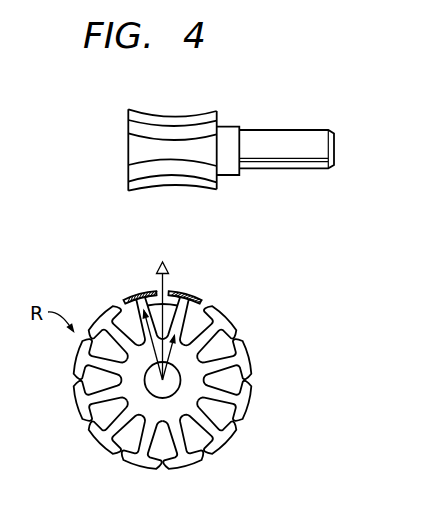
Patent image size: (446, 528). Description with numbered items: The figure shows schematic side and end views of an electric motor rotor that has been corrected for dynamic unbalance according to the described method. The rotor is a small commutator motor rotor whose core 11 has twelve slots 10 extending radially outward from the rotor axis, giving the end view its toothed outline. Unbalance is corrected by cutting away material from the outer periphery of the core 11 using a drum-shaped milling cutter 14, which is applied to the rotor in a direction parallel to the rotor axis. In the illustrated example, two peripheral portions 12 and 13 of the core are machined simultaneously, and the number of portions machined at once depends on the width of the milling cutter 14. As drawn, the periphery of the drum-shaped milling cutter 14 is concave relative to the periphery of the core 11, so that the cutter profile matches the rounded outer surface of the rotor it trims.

The slots 10 is at (181, 357).
The core 11 is at (227, 325).
The peripheral portion 12 is at (143, 293).
The peripheral portion 13 is at (192, 293).
The drum-shaped milling cutter 14 is at (188, 113).